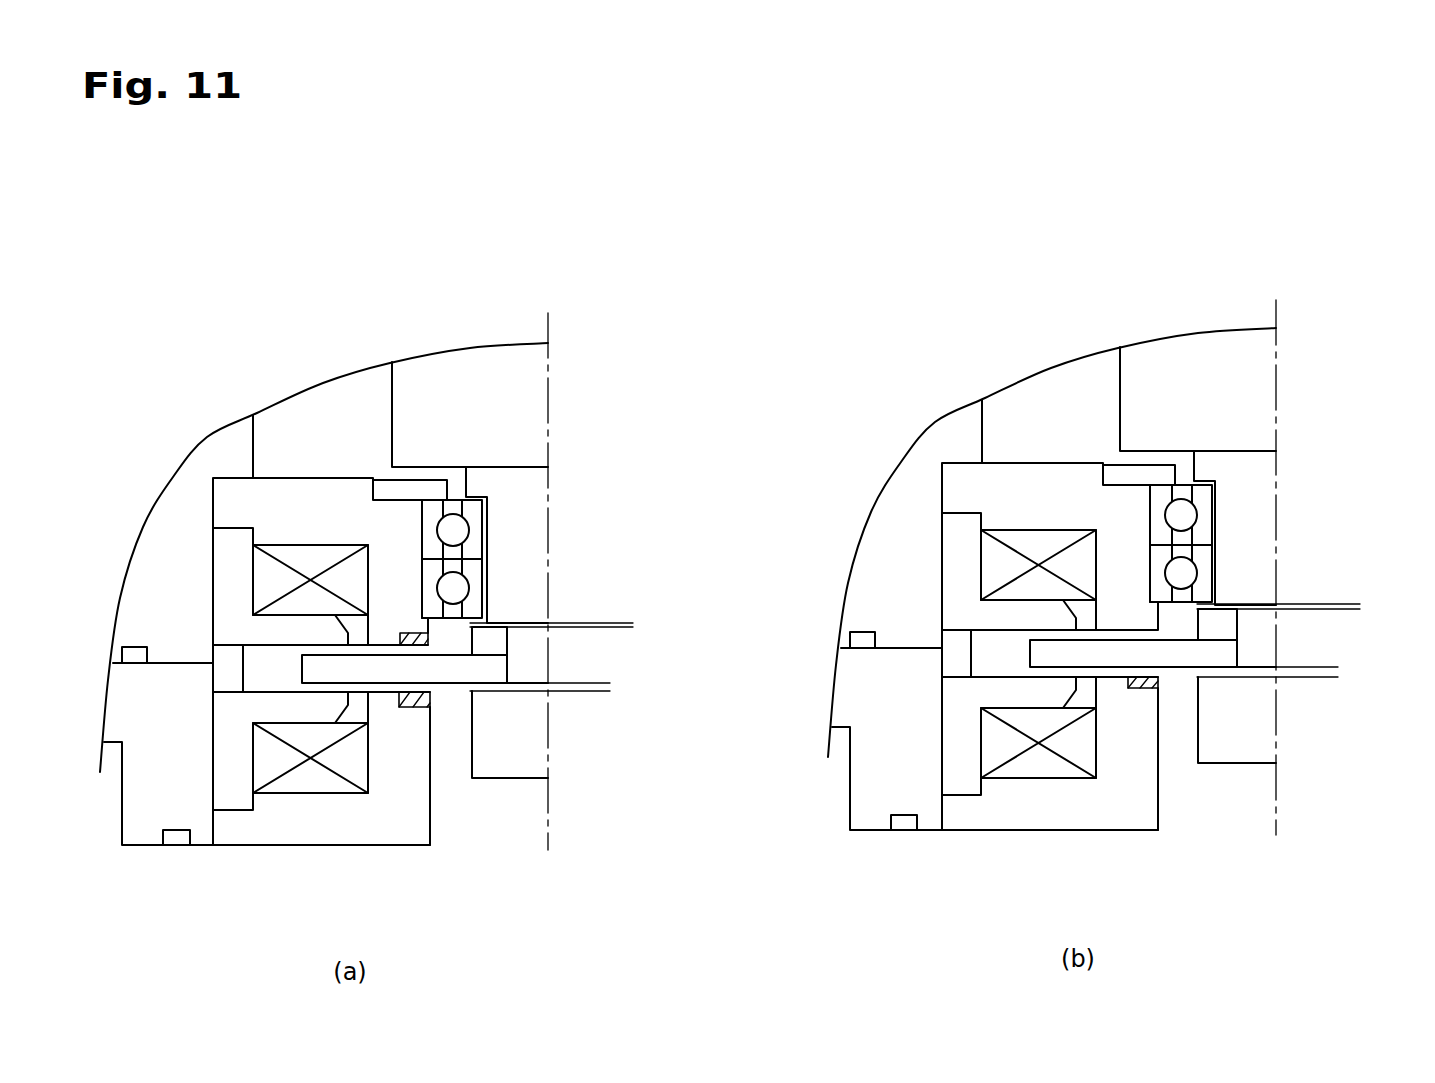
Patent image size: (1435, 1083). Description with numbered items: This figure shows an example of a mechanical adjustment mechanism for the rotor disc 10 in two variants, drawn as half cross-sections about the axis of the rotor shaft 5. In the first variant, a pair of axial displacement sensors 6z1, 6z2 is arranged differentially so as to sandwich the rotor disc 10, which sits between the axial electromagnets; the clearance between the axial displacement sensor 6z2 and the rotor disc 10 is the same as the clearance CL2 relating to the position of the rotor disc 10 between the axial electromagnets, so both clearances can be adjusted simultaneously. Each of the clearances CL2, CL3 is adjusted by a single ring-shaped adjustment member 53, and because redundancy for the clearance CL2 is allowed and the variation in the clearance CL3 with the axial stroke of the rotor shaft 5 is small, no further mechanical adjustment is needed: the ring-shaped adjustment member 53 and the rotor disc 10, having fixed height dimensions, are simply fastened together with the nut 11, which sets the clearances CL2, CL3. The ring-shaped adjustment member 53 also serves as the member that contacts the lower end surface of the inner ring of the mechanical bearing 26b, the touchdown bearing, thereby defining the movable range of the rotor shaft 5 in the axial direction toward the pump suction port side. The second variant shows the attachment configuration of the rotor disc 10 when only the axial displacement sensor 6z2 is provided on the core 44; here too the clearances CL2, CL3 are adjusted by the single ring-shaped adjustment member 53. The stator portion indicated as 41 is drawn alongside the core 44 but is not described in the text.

The rotor shaft 5 is at (512, 403).
The rotor disc 10 is at (317, 672).
The nut 11 is at (508, 742).
The mechanical bearing 26b is at (473, 532).
The stator core with coils 41 is at (285, 502).
The core 44 is at (270, 828).
The ring-shaped adjustment member 53 is at (493, 639).
The axial displacement sensor 6z1 is at (415, 633).
The axial displacement sensor 6z2 is at (407, 727).
The clearance CL2 is at (599, 645).
The clearance CL3 is at (619, 598).